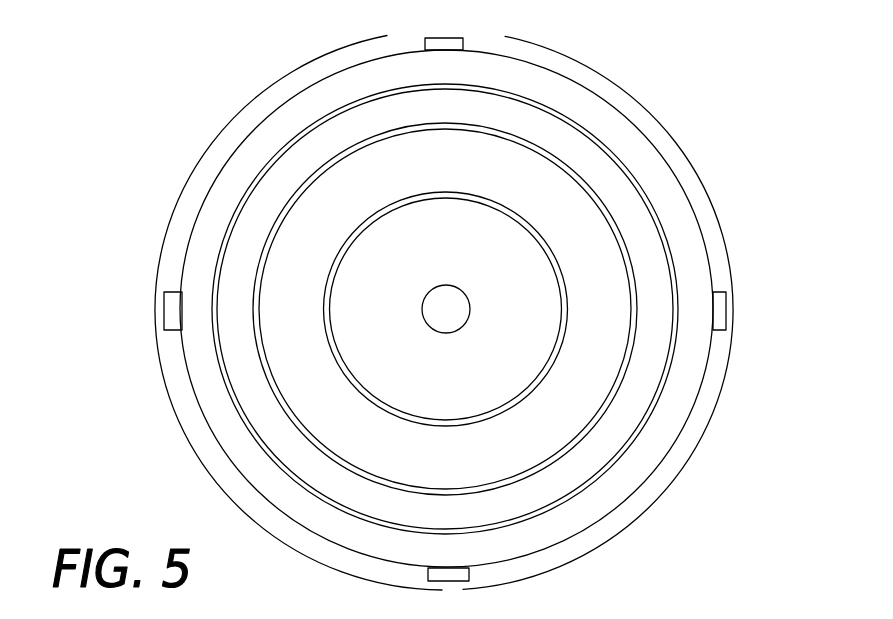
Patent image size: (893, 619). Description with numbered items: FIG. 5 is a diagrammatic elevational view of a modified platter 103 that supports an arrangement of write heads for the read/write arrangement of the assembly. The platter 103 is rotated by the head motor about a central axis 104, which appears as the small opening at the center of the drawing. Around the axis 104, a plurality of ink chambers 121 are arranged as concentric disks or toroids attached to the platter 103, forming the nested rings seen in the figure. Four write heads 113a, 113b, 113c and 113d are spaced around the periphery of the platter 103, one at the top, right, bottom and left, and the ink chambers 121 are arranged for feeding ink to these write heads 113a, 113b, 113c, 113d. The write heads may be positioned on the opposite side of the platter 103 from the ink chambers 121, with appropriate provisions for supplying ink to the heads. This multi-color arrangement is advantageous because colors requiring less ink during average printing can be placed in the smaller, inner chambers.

The platter 103 is at (647, 138).
The axis 104 is at (455, 333).
The write head 113a is at (437, 38).
The write head 113b is at (726, 315).
The write head 113c is at (443, 581).
The write head 113d is at (164, 311).
The ink chambers 121 is at (517, 352).